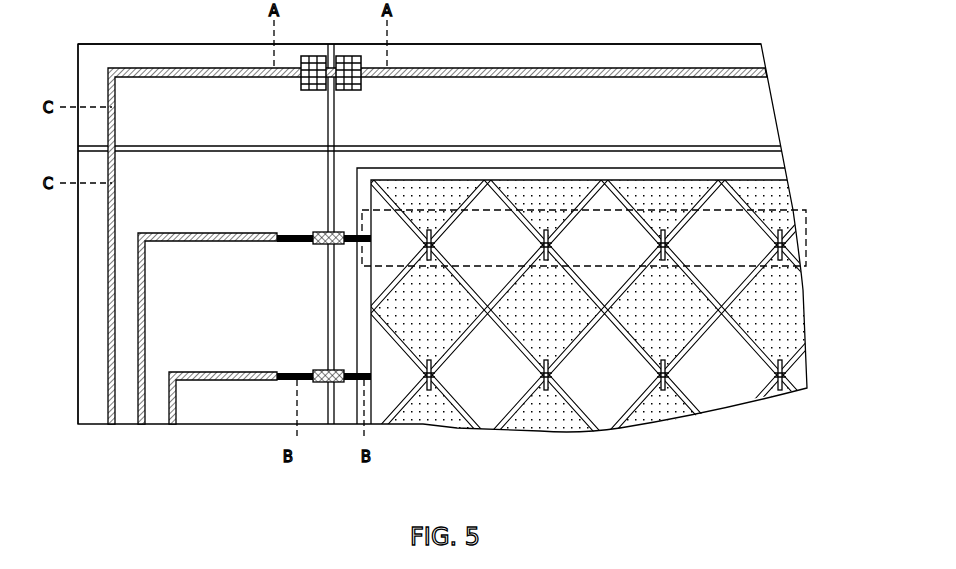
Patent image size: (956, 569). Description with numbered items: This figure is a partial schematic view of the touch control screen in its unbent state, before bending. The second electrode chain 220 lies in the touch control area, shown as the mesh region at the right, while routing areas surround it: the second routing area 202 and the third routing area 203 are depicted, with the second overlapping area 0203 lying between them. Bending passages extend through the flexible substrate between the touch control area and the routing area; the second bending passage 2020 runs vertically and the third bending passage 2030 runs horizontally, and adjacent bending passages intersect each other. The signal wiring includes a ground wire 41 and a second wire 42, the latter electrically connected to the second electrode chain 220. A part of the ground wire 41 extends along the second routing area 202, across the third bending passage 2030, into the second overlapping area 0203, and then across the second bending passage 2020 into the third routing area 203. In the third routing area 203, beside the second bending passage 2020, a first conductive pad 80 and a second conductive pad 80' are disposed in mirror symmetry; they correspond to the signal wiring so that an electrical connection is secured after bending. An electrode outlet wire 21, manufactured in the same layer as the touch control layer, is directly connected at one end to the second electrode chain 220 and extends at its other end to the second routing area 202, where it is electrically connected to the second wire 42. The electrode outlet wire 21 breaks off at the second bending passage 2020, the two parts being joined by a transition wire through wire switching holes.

The third routing area 203 is at (745, 111).
The second overlapping area 0203 is at (90, 60).
The second routing area 202 is at (90, 369).
The third bending passage 2030 is at (771, 150).
The second bending passage 2020 is at (331, 418).
The second electrode chain 220 is at (808, 232).
The ground wire 41 is at (108, 229).
The second wire 42 is at (138, 297).
The electrode outlet wire 21 is at (282, 378).
The first conductive pad 80 is at (315, 45).
The second conductive pad 80' is at (351, 45).